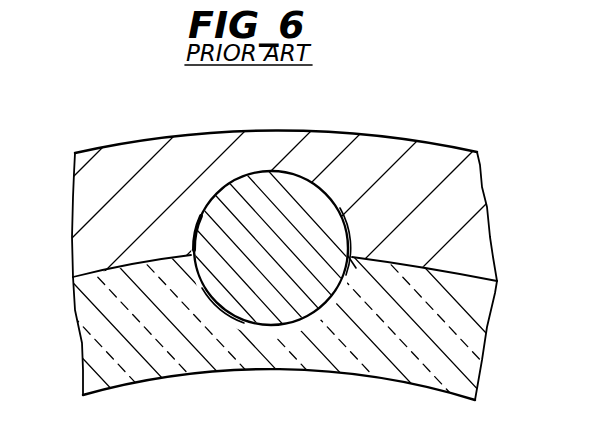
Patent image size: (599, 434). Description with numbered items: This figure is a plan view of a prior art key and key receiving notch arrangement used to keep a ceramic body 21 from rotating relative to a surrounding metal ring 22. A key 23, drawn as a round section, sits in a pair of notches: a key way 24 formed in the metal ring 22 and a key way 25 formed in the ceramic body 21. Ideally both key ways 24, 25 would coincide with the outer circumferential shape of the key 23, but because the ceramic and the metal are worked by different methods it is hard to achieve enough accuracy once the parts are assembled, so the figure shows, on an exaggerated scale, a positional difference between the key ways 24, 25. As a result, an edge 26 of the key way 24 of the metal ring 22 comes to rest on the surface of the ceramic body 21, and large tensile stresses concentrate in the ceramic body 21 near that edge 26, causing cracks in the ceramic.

The ceramic body 21 is at (279, 330).
The metal ring 22 is at (295, 257).
The key 23 is at (263, 212).
The key way 24 is at (182, 171).
The key way 25 is at (363, 314).
The edge 26 is at (153, 173).